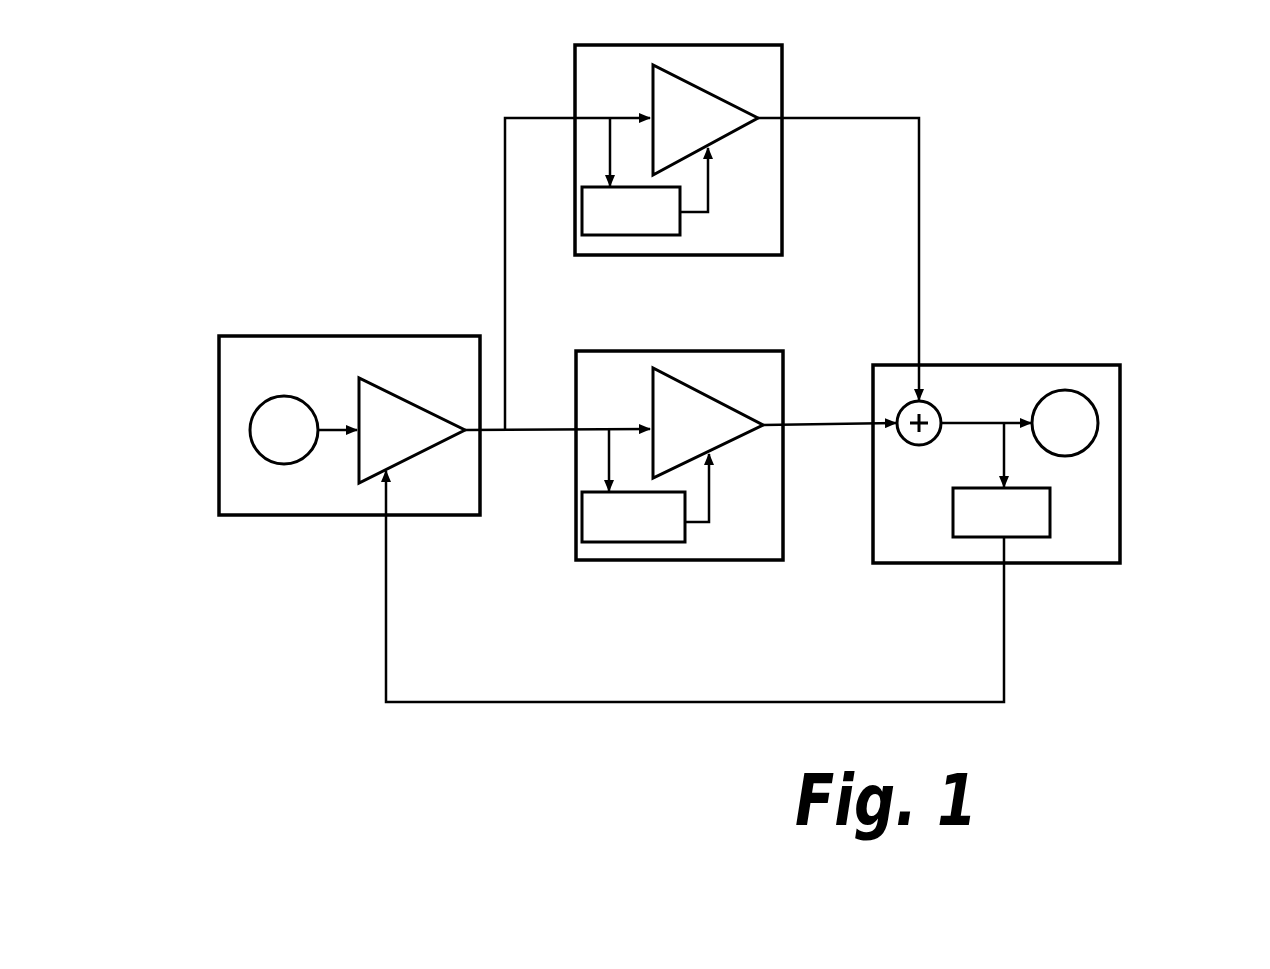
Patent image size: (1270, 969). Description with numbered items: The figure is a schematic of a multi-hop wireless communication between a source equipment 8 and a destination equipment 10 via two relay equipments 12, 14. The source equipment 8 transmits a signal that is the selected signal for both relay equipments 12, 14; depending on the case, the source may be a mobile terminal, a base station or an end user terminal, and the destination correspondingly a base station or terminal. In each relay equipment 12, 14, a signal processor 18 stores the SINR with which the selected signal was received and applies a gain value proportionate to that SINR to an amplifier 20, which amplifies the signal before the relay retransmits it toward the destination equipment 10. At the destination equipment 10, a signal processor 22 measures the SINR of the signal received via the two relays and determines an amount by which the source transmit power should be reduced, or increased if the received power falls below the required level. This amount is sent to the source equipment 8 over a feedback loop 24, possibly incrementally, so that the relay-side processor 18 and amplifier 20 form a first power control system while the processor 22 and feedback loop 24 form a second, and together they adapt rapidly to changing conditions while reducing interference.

The source equipment 8 is at (233, 517).
The destination equipment 10 is at (1070, 565).
The relay equipment 12 is at (730, 562).
The relay equipment 14 is at (670, 256).
The signal processor 18 is at (580, 217).
The amplifier 20 is at (735, 104).
The signal processor 22 is at (1050, 518).
The feedback loop 24 is at (600, 703).